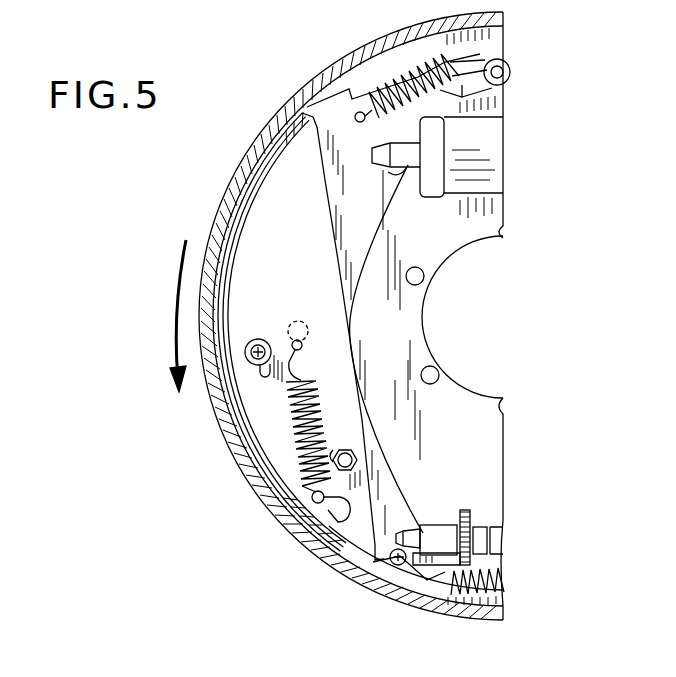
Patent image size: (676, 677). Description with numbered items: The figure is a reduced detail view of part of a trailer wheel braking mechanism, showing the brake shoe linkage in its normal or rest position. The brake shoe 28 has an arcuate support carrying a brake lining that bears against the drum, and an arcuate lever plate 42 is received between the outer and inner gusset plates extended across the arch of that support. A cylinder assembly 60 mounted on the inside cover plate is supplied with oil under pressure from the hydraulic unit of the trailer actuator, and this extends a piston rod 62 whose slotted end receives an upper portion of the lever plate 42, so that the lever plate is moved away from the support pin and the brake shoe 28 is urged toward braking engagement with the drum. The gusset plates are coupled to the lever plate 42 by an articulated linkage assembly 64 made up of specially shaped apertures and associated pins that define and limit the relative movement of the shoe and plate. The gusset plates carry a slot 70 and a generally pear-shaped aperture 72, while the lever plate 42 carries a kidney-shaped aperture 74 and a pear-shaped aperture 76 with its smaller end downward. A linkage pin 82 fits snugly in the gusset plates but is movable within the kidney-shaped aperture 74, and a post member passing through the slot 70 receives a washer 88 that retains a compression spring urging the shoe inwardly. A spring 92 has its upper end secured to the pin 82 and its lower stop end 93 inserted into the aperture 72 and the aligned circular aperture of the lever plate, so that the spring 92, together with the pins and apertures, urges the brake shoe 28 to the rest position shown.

The brake shoe 28 is at (248, 141).
The lever plate 42 is at (337, 120).
The cylinder assembly 60 is at (478, 152).
The piston rod 62 is at (437, 190).
The articulated linkage assembly 64 is at (150, 291).
The slot 70 is at (262, 372).
The pear-shaped aperture 72 is at (332, 510).
The kidney-shaped aperture 74 is at (308, 330).
The pear-shaped aperture 76 is at (336, 450).
The linkage pin 82 is at (290, 328).
The washer 88 is at (245, 350).
The spring 92 is at (296, 436).
The stop end 93 is at (312, 492).